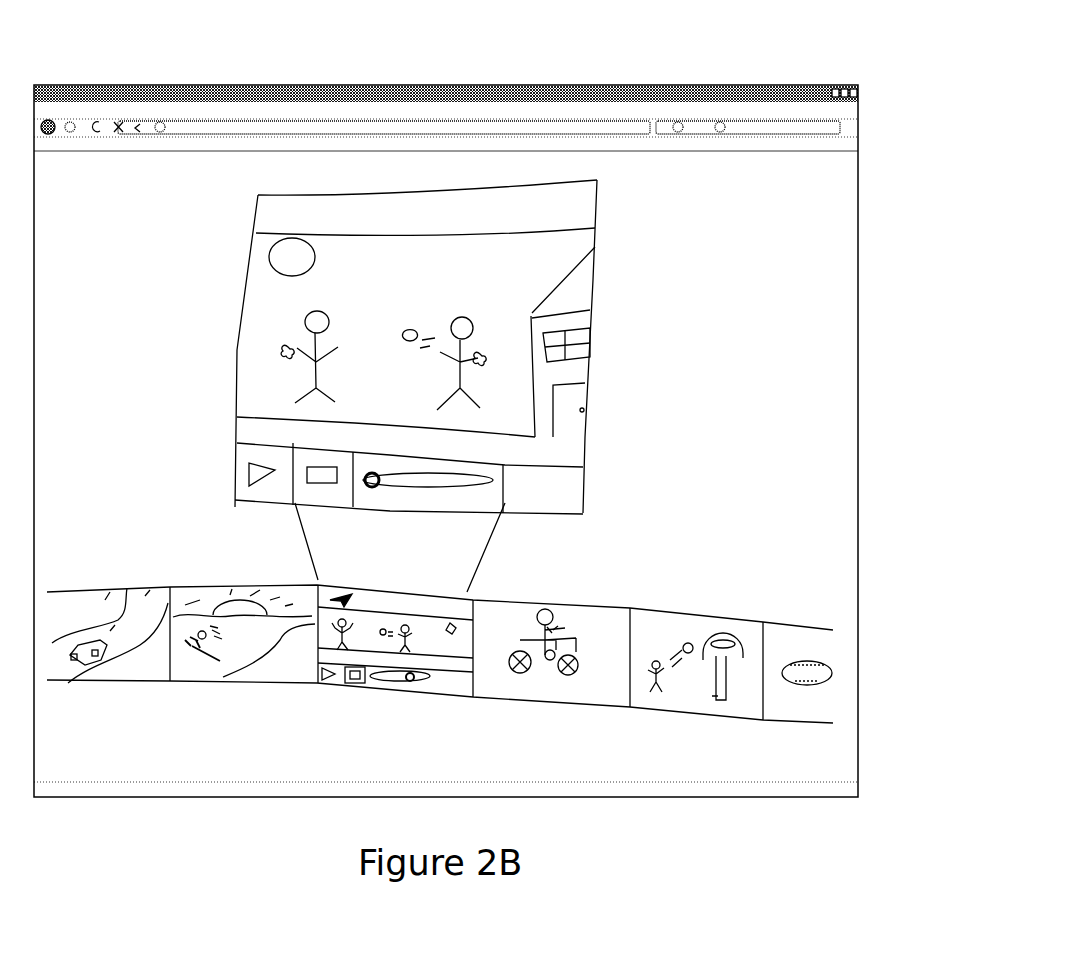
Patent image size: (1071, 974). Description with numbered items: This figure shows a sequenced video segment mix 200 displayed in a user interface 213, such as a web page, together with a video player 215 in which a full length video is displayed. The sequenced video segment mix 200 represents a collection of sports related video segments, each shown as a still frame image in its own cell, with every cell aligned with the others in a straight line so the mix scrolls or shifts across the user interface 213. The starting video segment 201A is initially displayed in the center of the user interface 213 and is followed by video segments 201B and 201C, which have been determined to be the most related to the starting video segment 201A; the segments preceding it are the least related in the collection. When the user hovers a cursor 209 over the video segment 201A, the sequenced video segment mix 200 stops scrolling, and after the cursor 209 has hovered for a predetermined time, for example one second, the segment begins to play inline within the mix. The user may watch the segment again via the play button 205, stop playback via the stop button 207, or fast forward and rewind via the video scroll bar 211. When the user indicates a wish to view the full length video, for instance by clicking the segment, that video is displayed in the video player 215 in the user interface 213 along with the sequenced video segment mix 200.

The user interface 213 is at (620, 92).
The video player 215 is at (593, 282).
The sequenced video segment mix 200 is at (64, 590).
The starting video segment 201A is at (367, 592).
The video segment 201B is at (567, 603).
The video segment 201C is at (655, 622).
The cursor 209 is at (328, 592).
The play button 205 is at (322, 683).
The stop button 207 is at (362, 683).
The video scroll bar 211 is at (408, 690).